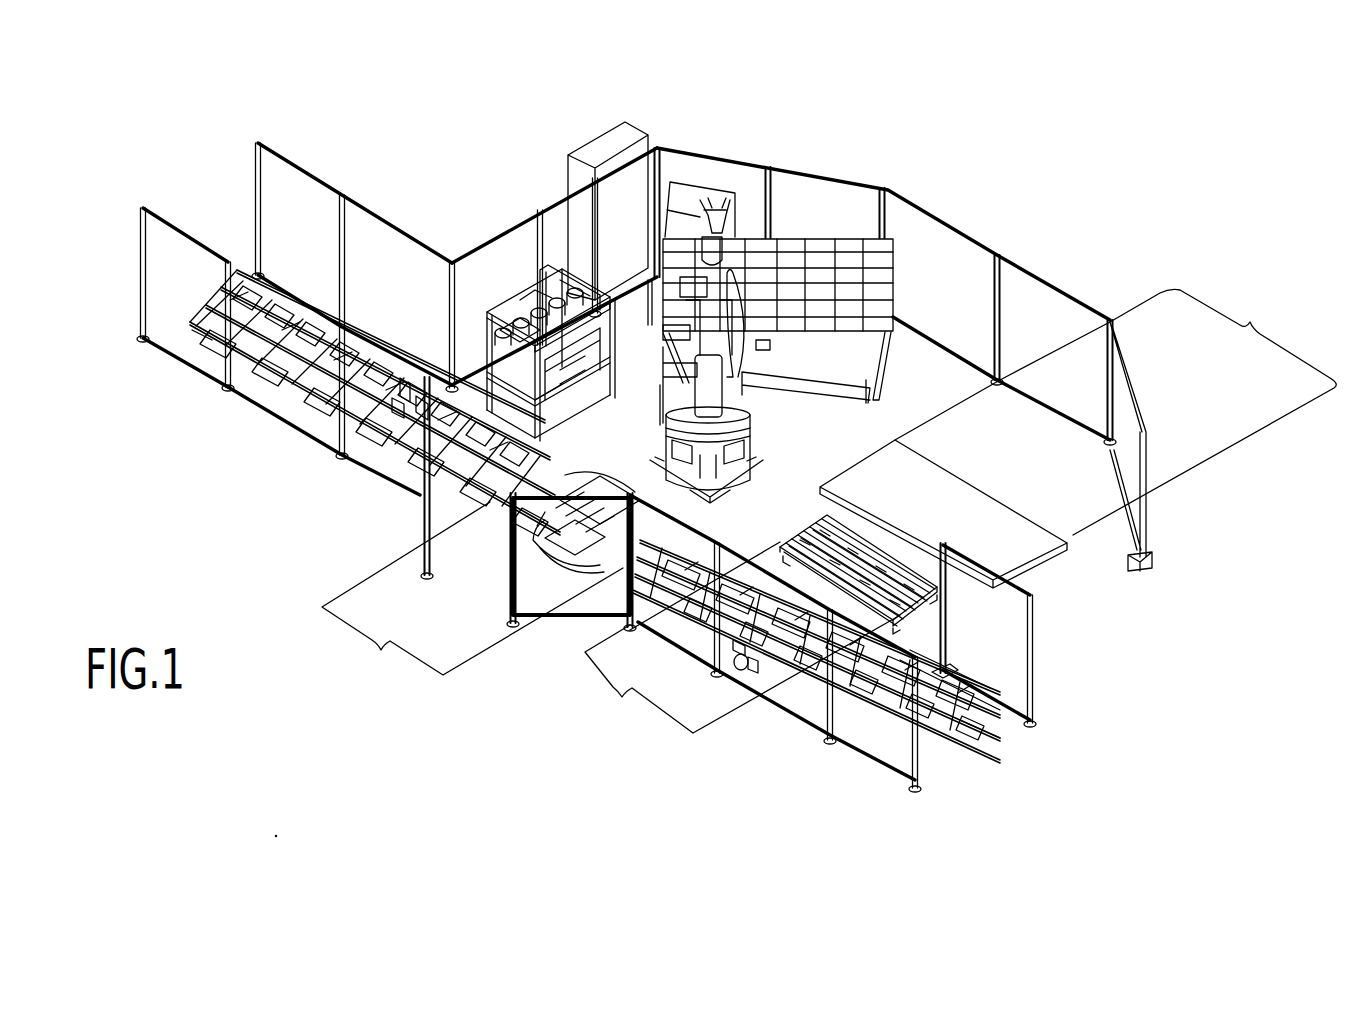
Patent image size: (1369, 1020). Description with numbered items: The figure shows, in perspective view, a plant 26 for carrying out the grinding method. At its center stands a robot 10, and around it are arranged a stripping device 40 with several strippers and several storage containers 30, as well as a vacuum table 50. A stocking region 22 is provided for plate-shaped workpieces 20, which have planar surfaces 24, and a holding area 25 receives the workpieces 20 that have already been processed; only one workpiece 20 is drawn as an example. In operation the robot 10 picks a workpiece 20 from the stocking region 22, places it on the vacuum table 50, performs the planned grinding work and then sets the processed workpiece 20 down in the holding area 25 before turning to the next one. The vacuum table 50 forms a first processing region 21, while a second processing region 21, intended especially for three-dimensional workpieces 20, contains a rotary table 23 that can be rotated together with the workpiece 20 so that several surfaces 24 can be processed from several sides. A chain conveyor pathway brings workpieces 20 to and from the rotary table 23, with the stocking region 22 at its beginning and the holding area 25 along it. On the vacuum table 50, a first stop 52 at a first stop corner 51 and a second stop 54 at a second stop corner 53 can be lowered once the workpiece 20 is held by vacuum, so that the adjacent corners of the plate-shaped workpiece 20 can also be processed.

The robot 10 is at (718, 473).
The workpiece 20 is at (898, 465).
The processing region 21 is at (891, 192).
The stocking region 22 is at (1168, 430).
The rotary table 23 is at (573, 560).
The surface of workpiece 24 is at (832, 493).
The holding area 25 is at (788, 651).
The plant 26 is at (110, 296).
The storage container 30 is at (528, 350).
The stripping device 40 is at (570, 408).
The vacuum table 50 is at (883, 272).
The first stop corner 51 is at (936, 334).
The first stop 52 is at (677, 330).
The second stop corner 53 is at (663, 399).
The second stop 54 is at (653, 327).